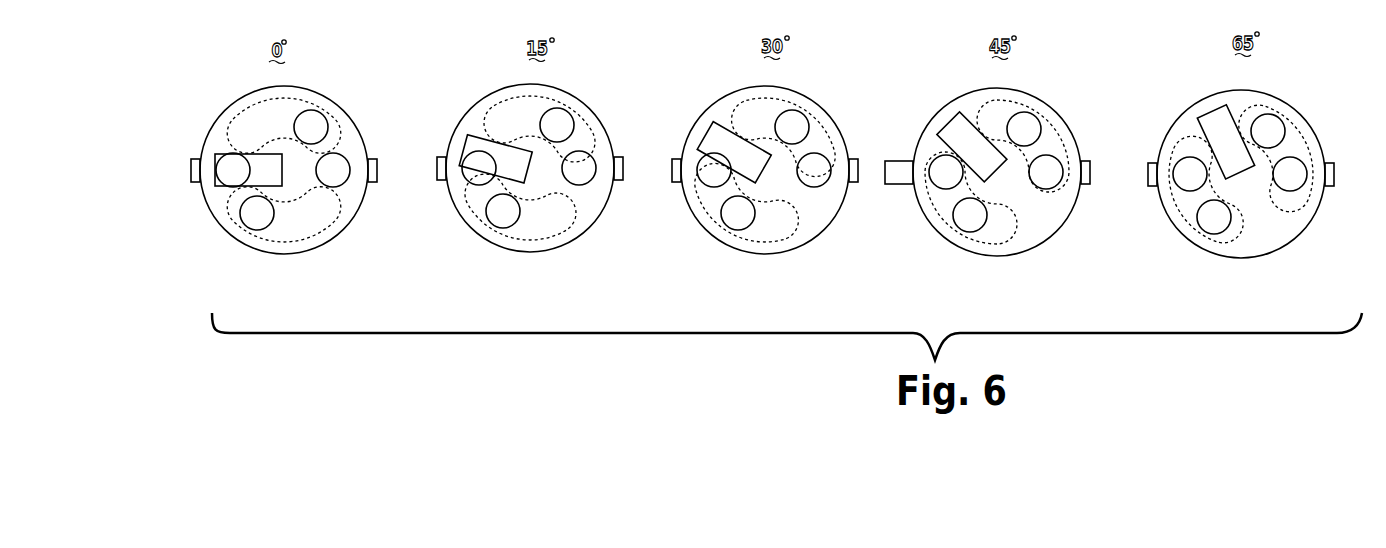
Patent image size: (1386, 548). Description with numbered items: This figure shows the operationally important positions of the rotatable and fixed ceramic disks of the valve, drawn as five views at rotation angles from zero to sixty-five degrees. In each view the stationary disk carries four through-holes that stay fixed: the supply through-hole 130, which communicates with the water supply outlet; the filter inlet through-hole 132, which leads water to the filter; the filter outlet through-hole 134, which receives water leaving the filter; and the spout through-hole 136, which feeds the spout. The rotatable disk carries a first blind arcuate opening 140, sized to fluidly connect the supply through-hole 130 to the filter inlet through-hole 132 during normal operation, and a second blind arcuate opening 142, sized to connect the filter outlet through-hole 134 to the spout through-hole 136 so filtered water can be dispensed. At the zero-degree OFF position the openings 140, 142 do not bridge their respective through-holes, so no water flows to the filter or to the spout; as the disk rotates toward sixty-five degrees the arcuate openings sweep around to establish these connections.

The supply through-hole 130 is at (222, 163).
The filter inlet through-hole 132 is at (248, 222).
The filter outlet through-hole 134 is at (342, 182).
The spout through-hole 136 is at (318, 117).
The first blind arcuate opening 140 is at (310, 233).
The second blind arcuate opening 142 is at (247, 108).